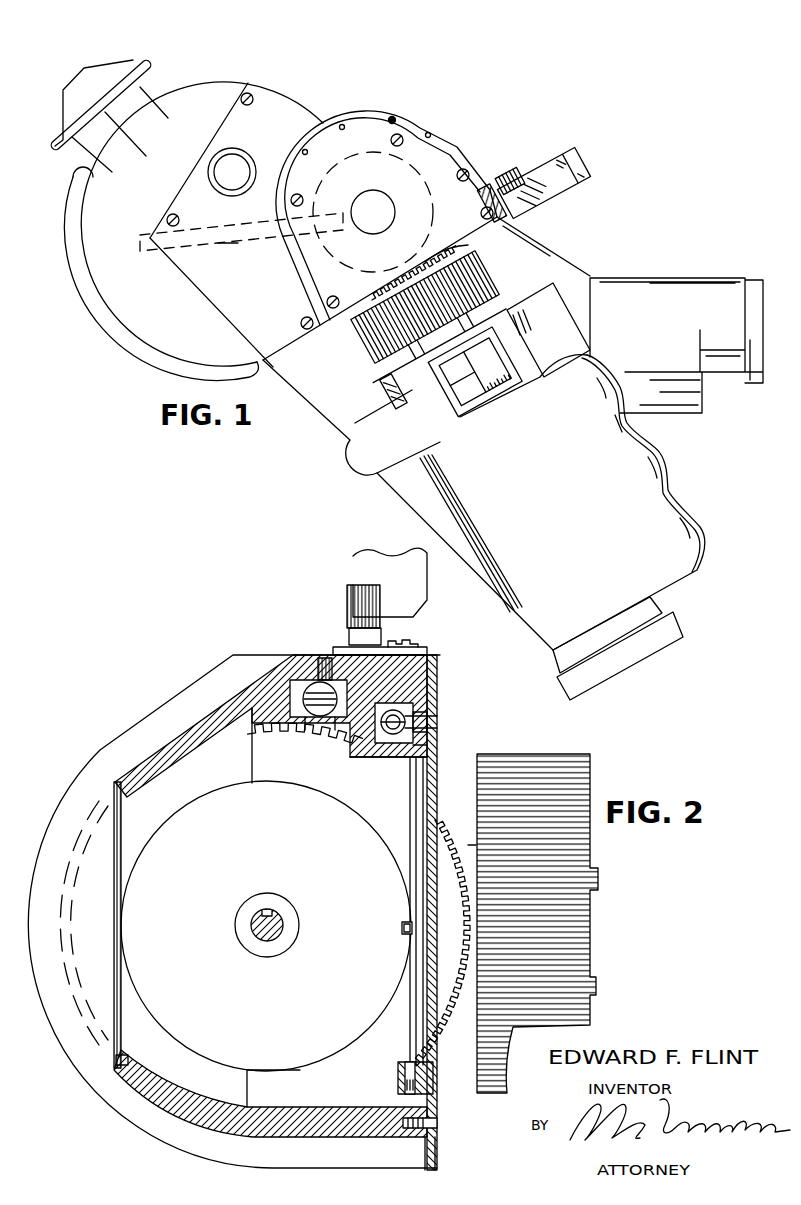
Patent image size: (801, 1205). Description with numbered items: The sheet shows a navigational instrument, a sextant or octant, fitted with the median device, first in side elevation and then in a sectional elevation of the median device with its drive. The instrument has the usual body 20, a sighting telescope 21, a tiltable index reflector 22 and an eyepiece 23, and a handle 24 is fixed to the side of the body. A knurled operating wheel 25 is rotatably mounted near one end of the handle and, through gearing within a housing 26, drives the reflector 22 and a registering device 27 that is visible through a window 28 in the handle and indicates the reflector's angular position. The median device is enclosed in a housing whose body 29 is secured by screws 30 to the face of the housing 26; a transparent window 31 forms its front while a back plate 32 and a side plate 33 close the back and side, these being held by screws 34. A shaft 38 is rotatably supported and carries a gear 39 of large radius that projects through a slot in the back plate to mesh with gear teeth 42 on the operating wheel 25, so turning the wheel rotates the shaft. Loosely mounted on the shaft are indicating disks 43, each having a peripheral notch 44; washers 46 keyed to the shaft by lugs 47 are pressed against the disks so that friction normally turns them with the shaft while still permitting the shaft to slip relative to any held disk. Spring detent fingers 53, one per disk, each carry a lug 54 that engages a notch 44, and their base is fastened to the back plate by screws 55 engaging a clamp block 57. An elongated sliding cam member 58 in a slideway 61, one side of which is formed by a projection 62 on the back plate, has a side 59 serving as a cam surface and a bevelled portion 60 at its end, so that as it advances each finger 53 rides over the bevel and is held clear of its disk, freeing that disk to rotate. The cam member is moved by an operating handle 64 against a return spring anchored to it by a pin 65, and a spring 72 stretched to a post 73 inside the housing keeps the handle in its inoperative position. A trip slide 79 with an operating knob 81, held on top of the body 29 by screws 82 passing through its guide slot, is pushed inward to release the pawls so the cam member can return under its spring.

In FIG. 1, the body 20 is at (205, 100).
In FIG. 1, the sighting telescope 21 is at (677, 290).
In FIG. 1, the tiltable index reflector 22 is at (228, 237).
In FIG. 1, the eyepiece 23 is at (101, 77).
In FIG. 1, the handle 24 is at (680, 522).
In FIG. 1, the knurled operating wheel 25 is at (370, 338).
In FIG. 2, the knurled operating wheel 25 is at (541, 778).
In FIG. 1, the housing 26 is at (280, 102).
In FIG. 1, the registering device 27 is at (450, 385).
In FIG. 1, the window 28 is at (500, 392).
In FIG. 2, the body 29 is at (260, 678).
In FIG. 1, the screws 30 is at (430, 104).
In FIG. 2, the window 31 is at (115, 900).
In FIG. 2, the back plate 32 is at (412, 1122).
In FIG. 1, the side plate 33 is at (378, 142).
In FIG. 1, the screws 34 is at (461, 172).
In FIG. 2, the screws 34 is at (112, 1058).
In FIG. 2, the shaft 38 is at (284, 924).
In FIG. 1, the gear 39 is at (440, 260).
In FIG. 2, the gear 39 is at (438, 817).
In FIG. 1, the gear teeth 42 is at (465, 248).
In FIG. 2, the gear teeth 42 is at (472, 845).
In FIG. 2, the indicating members 43 is at (327, 807).
In FIG. 2, the notch 44 is at (410, 930).
In FIG. 2, the washers 46 is at (240, 917).
In FIG. 2, the lug 47 is at (267, 911).
In FIG. 2, the spring detent fingers 53 is at (410, 838).
In FIG. 2, the lug 54 is at (404, 923).
In FIG. 2, the screws 55 is at (435, 1075).
In FIG. 2, the clamp block 57 is at (394, 1062).
In FIG. 2, the sliding cam member 58 is at (412, 718).
In FIG. 2, the side 59 is at (420, 722).
In FIG. 2, the bevelled portion 60 is at (421, 766).
In FIG. 2, the slideway 61 is at (384, 710).
In FIG. 2, the projection 62 is at (416, 735).
In FIG. 1, the handle 64 is at (580, 164).
In FIG. 2, the handle 64 is at (352, 560).
In FIG. 2, the pin 65 is at (362, 730).
In FIG. 2, the spring 72 is at (306, 712).
In FIG. 2, the post 73 is at (310, 692).
In FIG. 1, the slide 79 is at (488, 186).
In FIG. 2, the slide 79 is at (336, 650).
In FIG. 1, the operating knob 81 is at (517, 178).
In FIG. 2, the operating knob 81 is at (348, 600).
In FIG. 2, the screws 82 is at (405, 647).